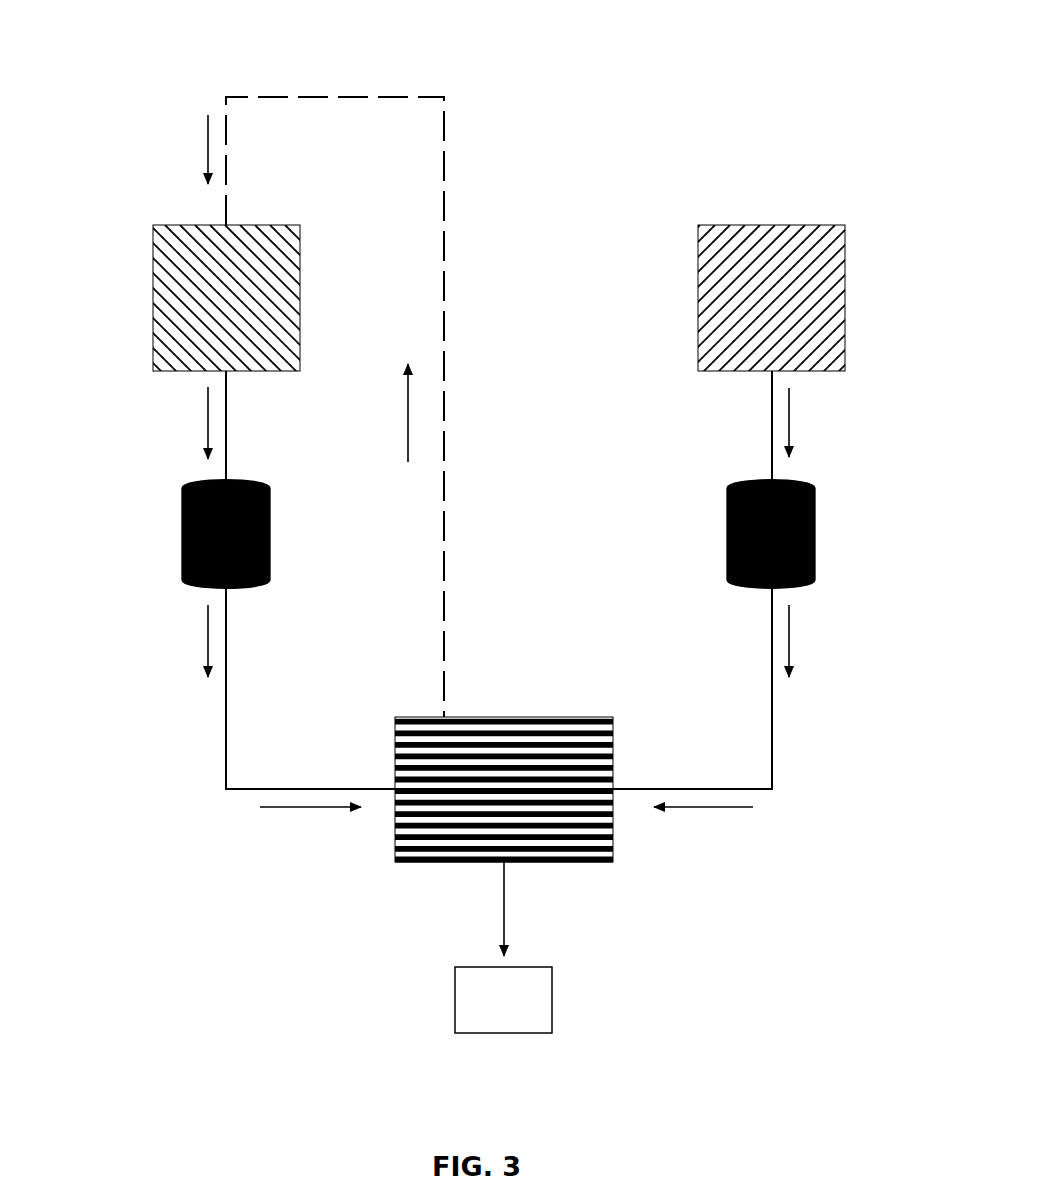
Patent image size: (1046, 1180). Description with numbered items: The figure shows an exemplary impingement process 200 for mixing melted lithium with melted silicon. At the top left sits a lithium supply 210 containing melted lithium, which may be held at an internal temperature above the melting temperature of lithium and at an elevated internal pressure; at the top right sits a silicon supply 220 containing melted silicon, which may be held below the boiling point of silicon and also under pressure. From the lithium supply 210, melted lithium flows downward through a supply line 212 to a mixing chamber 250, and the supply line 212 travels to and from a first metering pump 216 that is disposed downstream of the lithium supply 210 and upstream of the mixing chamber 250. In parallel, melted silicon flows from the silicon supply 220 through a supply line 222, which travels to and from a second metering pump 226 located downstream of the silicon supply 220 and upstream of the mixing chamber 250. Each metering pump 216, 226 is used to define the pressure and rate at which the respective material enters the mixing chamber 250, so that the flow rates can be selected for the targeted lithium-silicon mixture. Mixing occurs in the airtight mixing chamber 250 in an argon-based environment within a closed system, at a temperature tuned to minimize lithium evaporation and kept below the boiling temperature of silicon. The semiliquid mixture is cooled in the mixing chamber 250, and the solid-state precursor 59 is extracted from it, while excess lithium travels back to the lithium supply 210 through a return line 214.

The impingement process 200 is at (154, 20).
The lithium supply 210 is at (153, 296).
The supply line 212 is at (226, 423).
The return line 214 is at (444, 168).
The first metering pump 216 is at (182, 533).
The silicon supply 220 is at (845, 296).
The supply line 222 is at (772, 422).
The second metering pump 226 is at (815, 533).
The mixing chamber 250 is at (588, 862).
The solid-state precursor 59 is at (503, 1000).